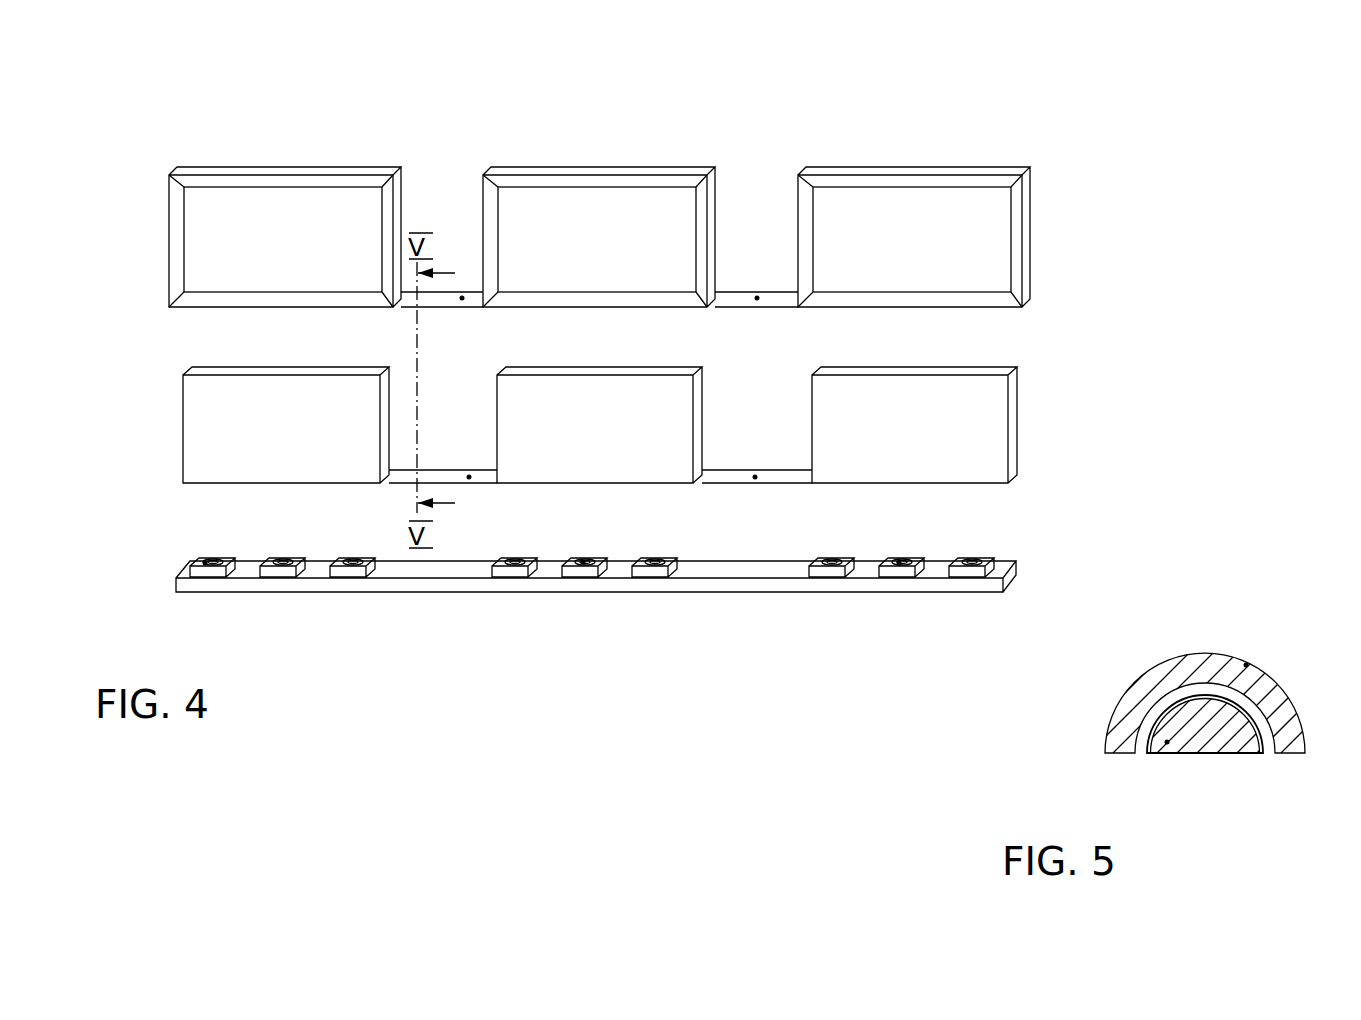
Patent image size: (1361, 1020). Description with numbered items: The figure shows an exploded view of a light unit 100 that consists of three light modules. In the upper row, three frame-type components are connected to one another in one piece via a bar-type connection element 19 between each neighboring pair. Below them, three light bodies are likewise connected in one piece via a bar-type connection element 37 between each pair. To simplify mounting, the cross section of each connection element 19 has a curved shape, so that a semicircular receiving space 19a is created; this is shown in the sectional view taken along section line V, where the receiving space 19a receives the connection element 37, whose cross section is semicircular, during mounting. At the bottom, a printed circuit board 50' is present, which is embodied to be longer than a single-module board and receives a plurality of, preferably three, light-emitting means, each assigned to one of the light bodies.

In FIG. 4, the light unit 100 is at (985, 118).
In FIG. 5, the bar-type connection element 19 is at (1247, 663).
In FIG. 5, the receiving space 19a is at (1140, 752).
In FIG. 5, the bar-type connection element 37 is at (1167, 744).
In FIG. 4, the printed circuit board 50' is at (638, 554).